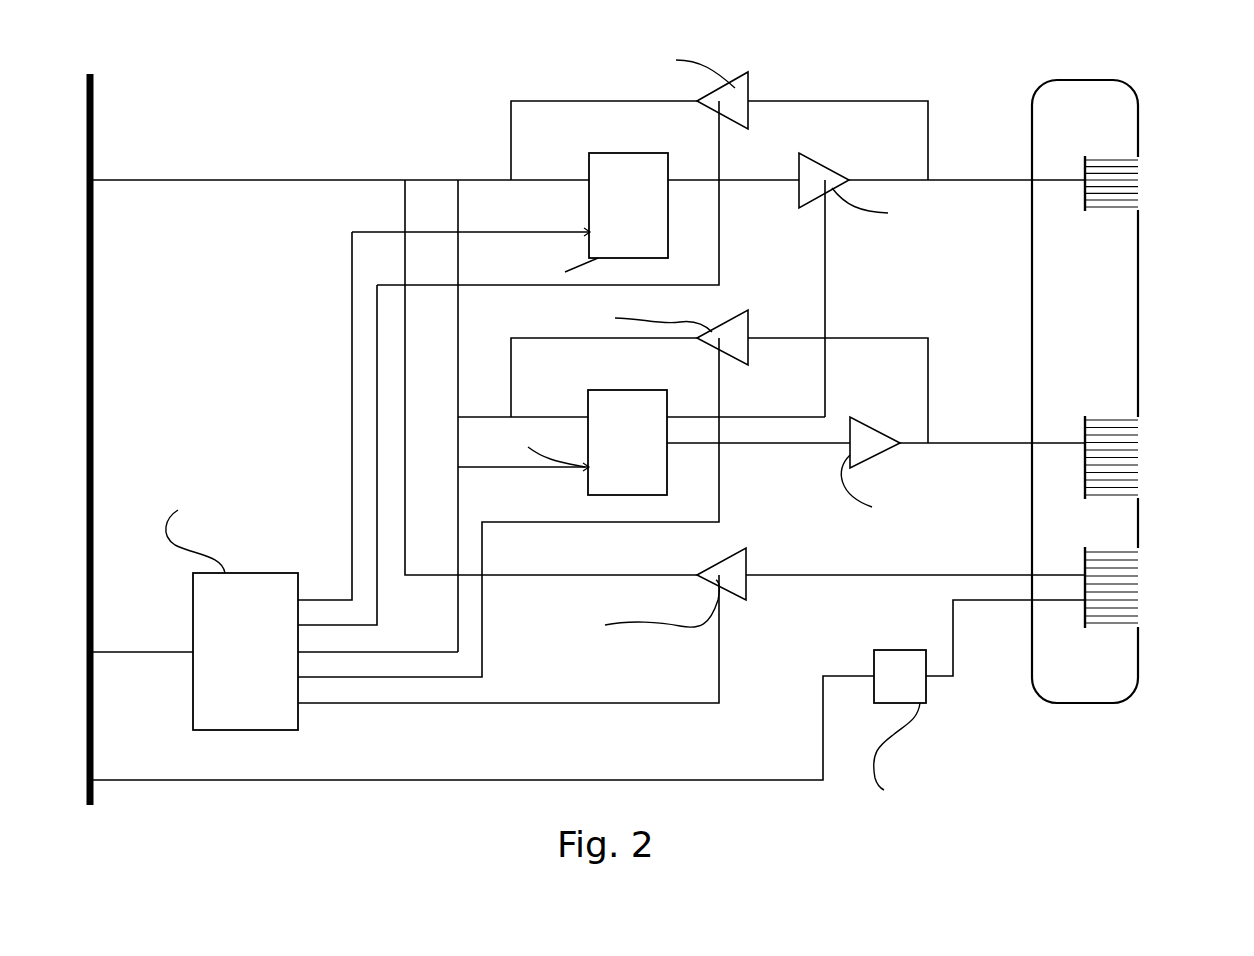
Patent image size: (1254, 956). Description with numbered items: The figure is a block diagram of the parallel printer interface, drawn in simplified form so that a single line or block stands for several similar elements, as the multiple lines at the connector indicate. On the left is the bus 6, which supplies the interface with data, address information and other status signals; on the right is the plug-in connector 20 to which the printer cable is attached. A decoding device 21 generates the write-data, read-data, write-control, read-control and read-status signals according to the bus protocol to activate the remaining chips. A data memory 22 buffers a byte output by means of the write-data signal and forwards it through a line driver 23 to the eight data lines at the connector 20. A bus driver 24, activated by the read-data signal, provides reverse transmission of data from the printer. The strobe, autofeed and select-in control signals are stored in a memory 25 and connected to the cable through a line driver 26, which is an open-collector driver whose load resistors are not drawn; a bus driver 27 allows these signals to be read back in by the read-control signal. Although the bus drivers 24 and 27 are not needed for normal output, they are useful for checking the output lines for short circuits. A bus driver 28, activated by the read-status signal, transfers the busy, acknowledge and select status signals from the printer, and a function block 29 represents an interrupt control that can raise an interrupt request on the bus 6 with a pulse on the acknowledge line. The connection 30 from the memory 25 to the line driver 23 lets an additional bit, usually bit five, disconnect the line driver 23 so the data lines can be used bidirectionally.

The bus 6 is at (93, 114).
The plug-in connector 20 is at (1140, 130).
The decoding device 21 is at (248, 573).
The data memory 22 is at (617, 153).
The line driver 23 is at (825, 165).
The bus driver 24 is at (745, 80).
The memory 25 is at (615, 390).
The line driver 26 is at (870, 423).
The bus driver 27 is at (745, 318).
The bus driver 28 is at (745, 556).
The interrupt control 29 is at (900, 650).
The connection 30 is at (825, 268).